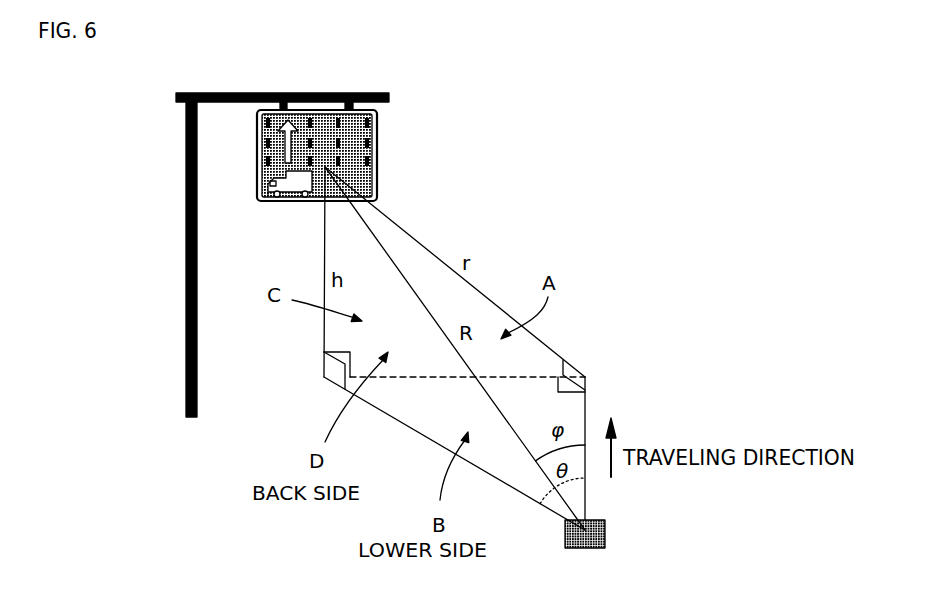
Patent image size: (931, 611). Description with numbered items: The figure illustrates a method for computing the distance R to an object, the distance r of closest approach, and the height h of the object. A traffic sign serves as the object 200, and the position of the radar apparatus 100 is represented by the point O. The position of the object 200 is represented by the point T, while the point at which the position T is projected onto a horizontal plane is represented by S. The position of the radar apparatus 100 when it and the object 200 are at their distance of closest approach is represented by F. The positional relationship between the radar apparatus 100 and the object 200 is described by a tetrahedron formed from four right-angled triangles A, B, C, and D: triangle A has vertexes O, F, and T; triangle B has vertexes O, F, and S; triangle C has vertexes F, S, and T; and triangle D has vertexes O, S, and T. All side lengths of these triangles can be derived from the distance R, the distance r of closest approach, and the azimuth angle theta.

The object 200 is at (377, 123).
The radar apparatus 100 is at (605, 531).
The position of the object T is at (325, 167).
The projection of the object position onto a horizontal plane S is at (322, 370).
The position of the radar apparatus at closest approach F is at (585, 376).
The position of the radar apparatus O is at (564, 514).